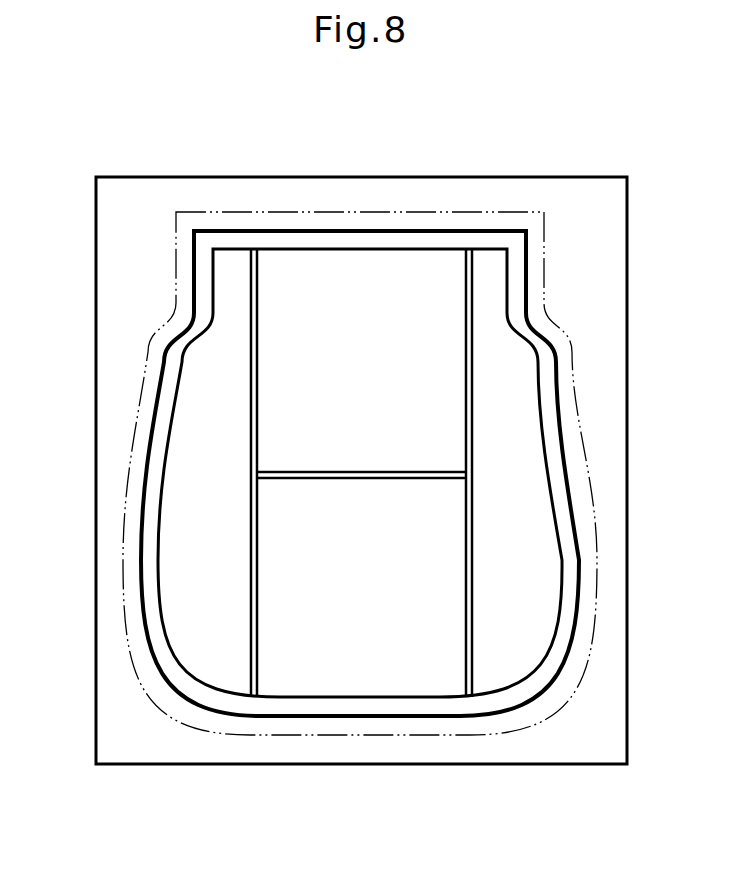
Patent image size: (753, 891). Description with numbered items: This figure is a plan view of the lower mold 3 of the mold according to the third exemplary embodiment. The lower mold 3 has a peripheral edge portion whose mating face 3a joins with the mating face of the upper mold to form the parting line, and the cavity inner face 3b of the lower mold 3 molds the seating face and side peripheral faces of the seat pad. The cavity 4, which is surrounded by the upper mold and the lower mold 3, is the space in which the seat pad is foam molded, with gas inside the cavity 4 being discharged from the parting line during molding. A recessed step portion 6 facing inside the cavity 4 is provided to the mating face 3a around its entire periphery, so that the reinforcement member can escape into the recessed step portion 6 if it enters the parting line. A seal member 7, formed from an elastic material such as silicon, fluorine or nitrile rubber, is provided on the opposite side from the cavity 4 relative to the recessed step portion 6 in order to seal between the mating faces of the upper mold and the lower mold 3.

The lower mold 3 is at (560, 177).
The mating face 3a is at (424, 195).
The cavity inner face 3b is at (407, 250).
The cavity 4 is at (368, 442).
The recessed step portion 6 is at (360, 240).
The seal member 7 is at (514, 210).